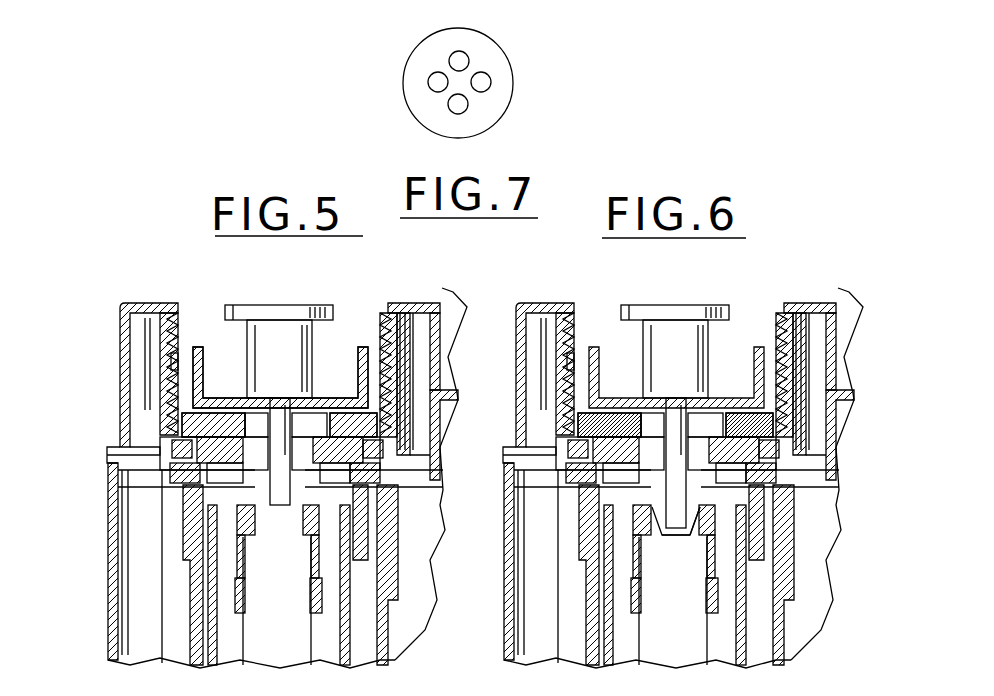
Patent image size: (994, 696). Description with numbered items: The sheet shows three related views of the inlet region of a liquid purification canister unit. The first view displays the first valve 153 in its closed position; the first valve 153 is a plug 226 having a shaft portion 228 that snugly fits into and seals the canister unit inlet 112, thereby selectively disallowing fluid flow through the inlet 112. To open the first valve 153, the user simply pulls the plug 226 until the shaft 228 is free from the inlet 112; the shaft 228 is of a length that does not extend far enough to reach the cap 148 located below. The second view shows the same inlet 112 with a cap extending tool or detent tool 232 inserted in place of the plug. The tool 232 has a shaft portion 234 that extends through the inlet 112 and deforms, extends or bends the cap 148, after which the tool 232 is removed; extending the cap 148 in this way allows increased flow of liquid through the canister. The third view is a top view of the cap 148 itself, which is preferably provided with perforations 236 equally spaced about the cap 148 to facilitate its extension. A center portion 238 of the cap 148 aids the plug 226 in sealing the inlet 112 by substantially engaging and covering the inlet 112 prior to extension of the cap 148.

In FIG. 5, the canister unit inlet 112 is at (272, 457).
In FIG. 6, the canister unit inlet 112 is at (668, 457).
In FIG. 5, the cap 148 is at (240, 563).
In FIG. 6, the cap 148 is at (717, 558).
In FIG. 7, the cap 148 is at (512, 95).
In FIG. 5, the first valve 153 is at (320, 372).
In FIG. 5, the plug 226 is at (274, 305).
In FIG. 5, the shaft portion 228 is at (286, 455).
In FIG. 6, the cap extending tool 232 is at (670, 305).
In FIG. 6, the shaft portion 234 is at (728, 434).
In FIG. 6, the perforations 236 is at (697, 540).
In FIG. 7, the perforations 236 is at (458, 62).
In FIG. 6, the center portion 238 is at (675, 537).
In FIG. 7, the center portion 238 is at (482, 82).